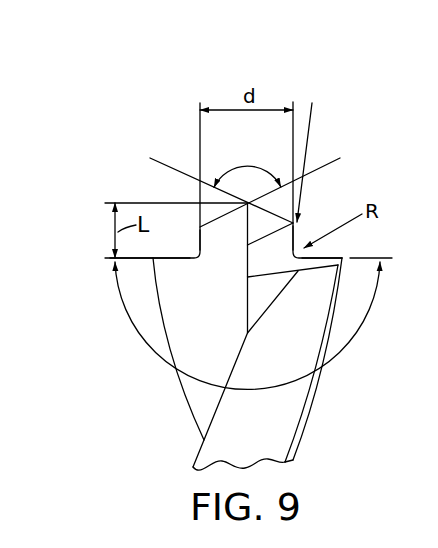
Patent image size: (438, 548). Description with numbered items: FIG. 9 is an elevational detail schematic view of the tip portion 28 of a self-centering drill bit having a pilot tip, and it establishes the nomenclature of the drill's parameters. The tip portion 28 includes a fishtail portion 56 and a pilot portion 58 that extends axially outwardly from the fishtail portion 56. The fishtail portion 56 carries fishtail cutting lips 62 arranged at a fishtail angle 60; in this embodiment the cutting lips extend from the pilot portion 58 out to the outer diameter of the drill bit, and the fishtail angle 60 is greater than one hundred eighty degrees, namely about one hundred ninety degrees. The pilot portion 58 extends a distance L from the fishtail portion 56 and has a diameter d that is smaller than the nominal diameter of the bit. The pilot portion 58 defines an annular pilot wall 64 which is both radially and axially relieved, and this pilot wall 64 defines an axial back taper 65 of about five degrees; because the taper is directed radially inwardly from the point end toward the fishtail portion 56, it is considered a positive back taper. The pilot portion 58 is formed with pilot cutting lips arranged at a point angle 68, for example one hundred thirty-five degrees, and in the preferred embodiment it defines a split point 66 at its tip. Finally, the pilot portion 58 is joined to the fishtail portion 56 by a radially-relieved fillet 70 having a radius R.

The tip portion 28 is at (363, 141).
The fishtail portion 56 is at (342, 295).
The pilot portion 58 is at (303, 214).
The fishtail angle 60 is at (364, 322).
The fishtail cutting lips 62 is at (329, 256).
The annular pilot wall 64 is at (296, 245).
The axial back taper 65 is at (316, 110).
The split point 66 is at (244, 178).
The point angle 68 is at (250, 167).
The radially-relieved fillet 70 is at (295, 250).